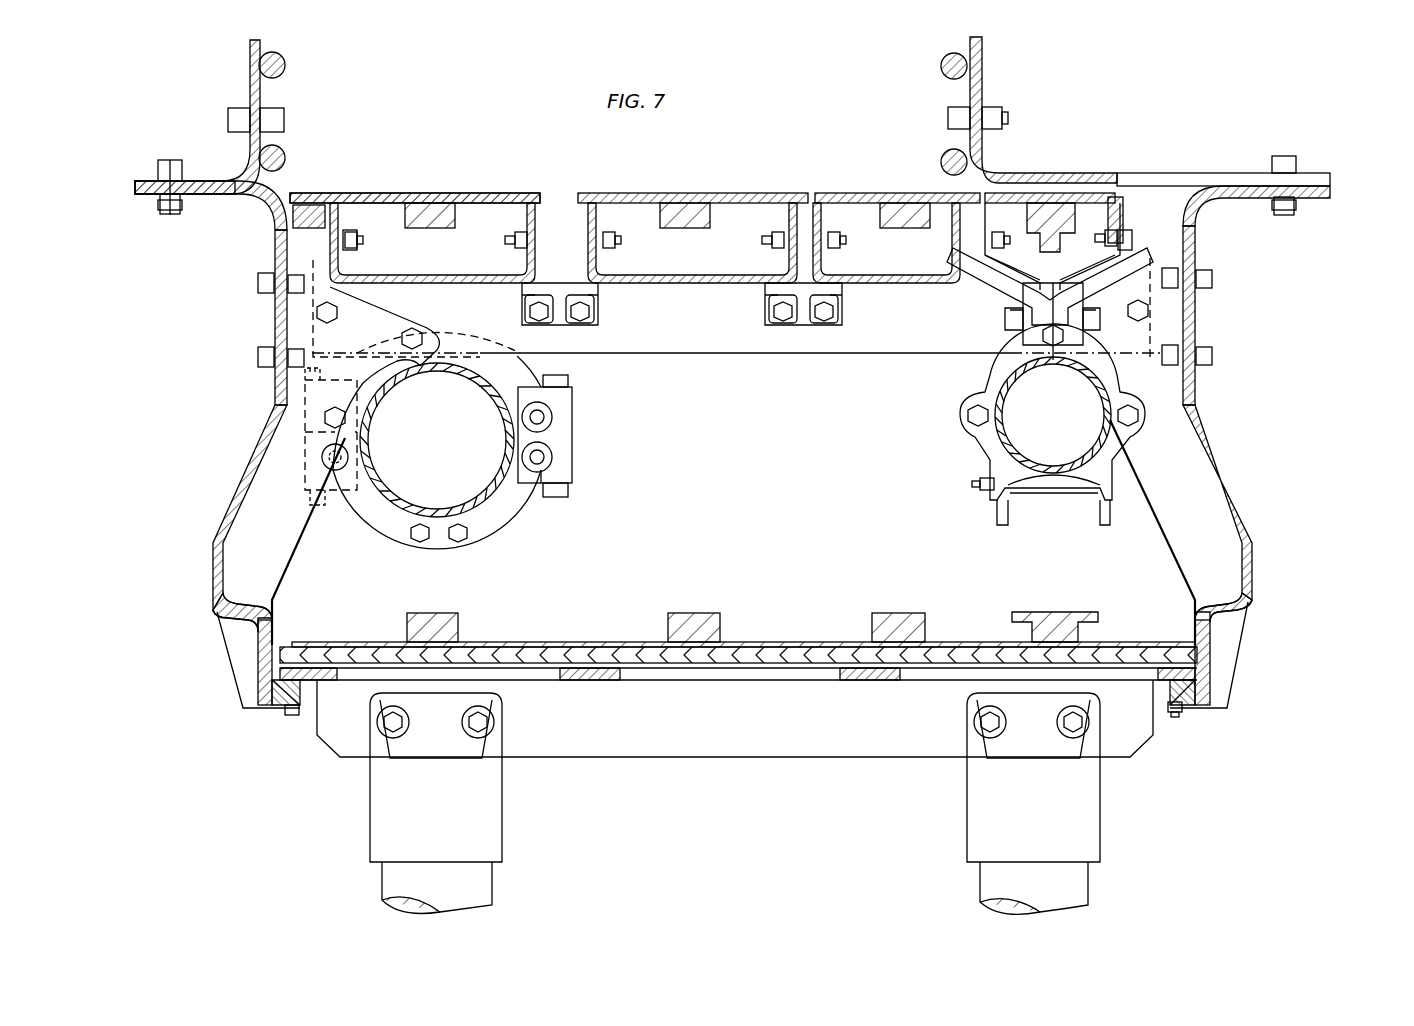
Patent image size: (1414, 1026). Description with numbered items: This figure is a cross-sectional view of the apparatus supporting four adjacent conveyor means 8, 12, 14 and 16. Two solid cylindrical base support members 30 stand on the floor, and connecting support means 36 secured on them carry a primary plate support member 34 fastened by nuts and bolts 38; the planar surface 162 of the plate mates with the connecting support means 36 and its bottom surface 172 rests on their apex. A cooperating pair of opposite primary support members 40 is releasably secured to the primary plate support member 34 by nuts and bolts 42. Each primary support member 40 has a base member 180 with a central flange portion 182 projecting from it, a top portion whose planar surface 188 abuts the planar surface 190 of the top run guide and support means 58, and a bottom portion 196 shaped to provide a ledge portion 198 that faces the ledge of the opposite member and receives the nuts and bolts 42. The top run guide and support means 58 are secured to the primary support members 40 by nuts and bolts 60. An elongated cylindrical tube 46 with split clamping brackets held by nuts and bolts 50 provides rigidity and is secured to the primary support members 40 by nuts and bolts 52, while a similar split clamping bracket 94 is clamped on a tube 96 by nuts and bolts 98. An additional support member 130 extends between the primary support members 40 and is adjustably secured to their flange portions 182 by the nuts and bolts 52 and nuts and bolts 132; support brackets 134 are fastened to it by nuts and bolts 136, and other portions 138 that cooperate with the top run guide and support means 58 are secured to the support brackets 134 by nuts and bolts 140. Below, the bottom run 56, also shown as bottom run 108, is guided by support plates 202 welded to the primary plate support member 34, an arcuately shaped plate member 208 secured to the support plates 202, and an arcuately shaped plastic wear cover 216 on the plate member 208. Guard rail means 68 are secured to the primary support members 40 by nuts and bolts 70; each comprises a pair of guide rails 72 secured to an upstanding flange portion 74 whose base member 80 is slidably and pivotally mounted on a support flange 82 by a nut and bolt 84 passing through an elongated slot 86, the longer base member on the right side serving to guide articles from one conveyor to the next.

The conveyor means 8 is at (1052, 195).
The conveyor means 12 is at (880, 193).
The conveyor means 14 is at (615, 193).
The conveyor means 16 is at (455, 193).
The base support member 30 is at (488, 880).
The primary plate support member 34 is at (642, 745).
The connecting support means 36 is at (490, 813).
The nuts and bolts 38 is at (390, 728).
The primary support member 40 is at (215, 480).
The nuts and bolts 42 is at (293, 718).
The elongated cylindrical tube 46 is at (508, 410).
The nuts and bolts 50 is at (328, 496).
The nuts and bolts 52 is at (412, 335).
The bottom run 56 is at (636, 642).
The top run guide and support means 58 is at (360, 208).
The nuts and bolts 60 is at (355, 246).
The guard rail means 68 is at (302, 108).
The nuts and bolts 70 is at (265, 352).
The guide rails 72 is at (285, 68).
The upstanding flange portion 74 is at (250, 72).
The base member 80 is at (158, 181).
The support flange 82 is at (150, 200).
The nut and bolt 84 is at (172, 162).
The elongated slot 86 is at (218, 188).
The split clamping bracket 94 is at (990, 368).
The elongated cylindrical tube 96 is at (1100, 413).
The nuts and bolts 98 is at (985, 490).
The bottom run 108 is at (1075, 620).
The additional support member 130 is at (698, 340).
The nuts and bolts 132 is at (317, 313).
The support bracket 134 is at (575, 285).
The nuts and bolts 136 is at (582, 315).
The other portions 138 is at (440, 220).
The nuts and bolts 140 is at (770, 240).
The generally planar surface 162 is at (738, 679).
The bottom surface 172 is at (840, 750).
The base member 180 is at (263, 440).
The central flange portion 182 is at (280, 575).
The generally planar surface 188 is at (293, 230).
The generally planar surface 190 is at (330, 215).
The bottom portion 196 is at (230, 608).
The ledge portion 198 is at (270, 706).
The support plates 202 is at (350, 647).
The arcuately shaped plate member 208 is at (665, 660).
The arcuately shaped plastic wear cover 216 is at (795, 655).